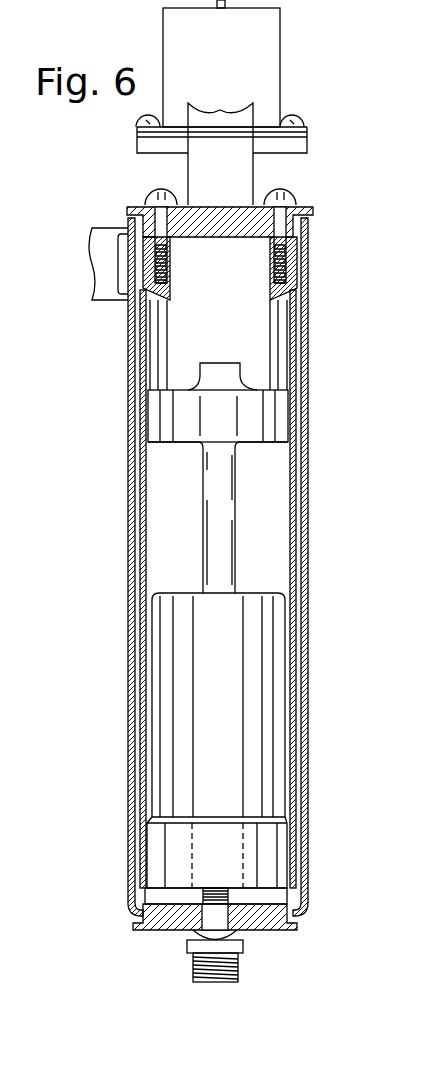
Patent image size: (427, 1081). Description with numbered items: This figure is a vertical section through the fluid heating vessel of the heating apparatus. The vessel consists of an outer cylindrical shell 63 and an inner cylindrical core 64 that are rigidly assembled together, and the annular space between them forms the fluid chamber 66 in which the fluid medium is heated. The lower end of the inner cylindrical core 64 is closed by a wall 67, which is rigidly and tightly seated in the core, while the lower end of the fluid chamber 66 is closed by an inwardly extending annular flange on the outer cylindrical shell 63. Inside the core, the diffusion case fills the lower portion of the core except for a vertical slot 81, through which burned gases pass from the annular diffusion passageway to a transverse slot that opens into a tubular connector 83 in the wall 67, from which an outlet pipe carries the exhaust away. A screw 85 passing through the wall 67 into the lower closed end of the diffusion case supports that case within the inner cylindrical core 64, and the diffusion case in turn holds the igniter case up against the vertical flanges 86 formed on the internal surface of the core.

The outer cylindrical shell 63 is at (305, 400).
The fluid chamber 66 is at (298, 368).
The vertical flanges 86 is at (273, 327).
The inner cylindrical core 64 is at (293, 460).
The vertical slot 81 is at (230, 842).
The wall 67 is at (272, 928).
The screw 85 is at (215, 922).
The tubular connector 83 is at (237, 968).